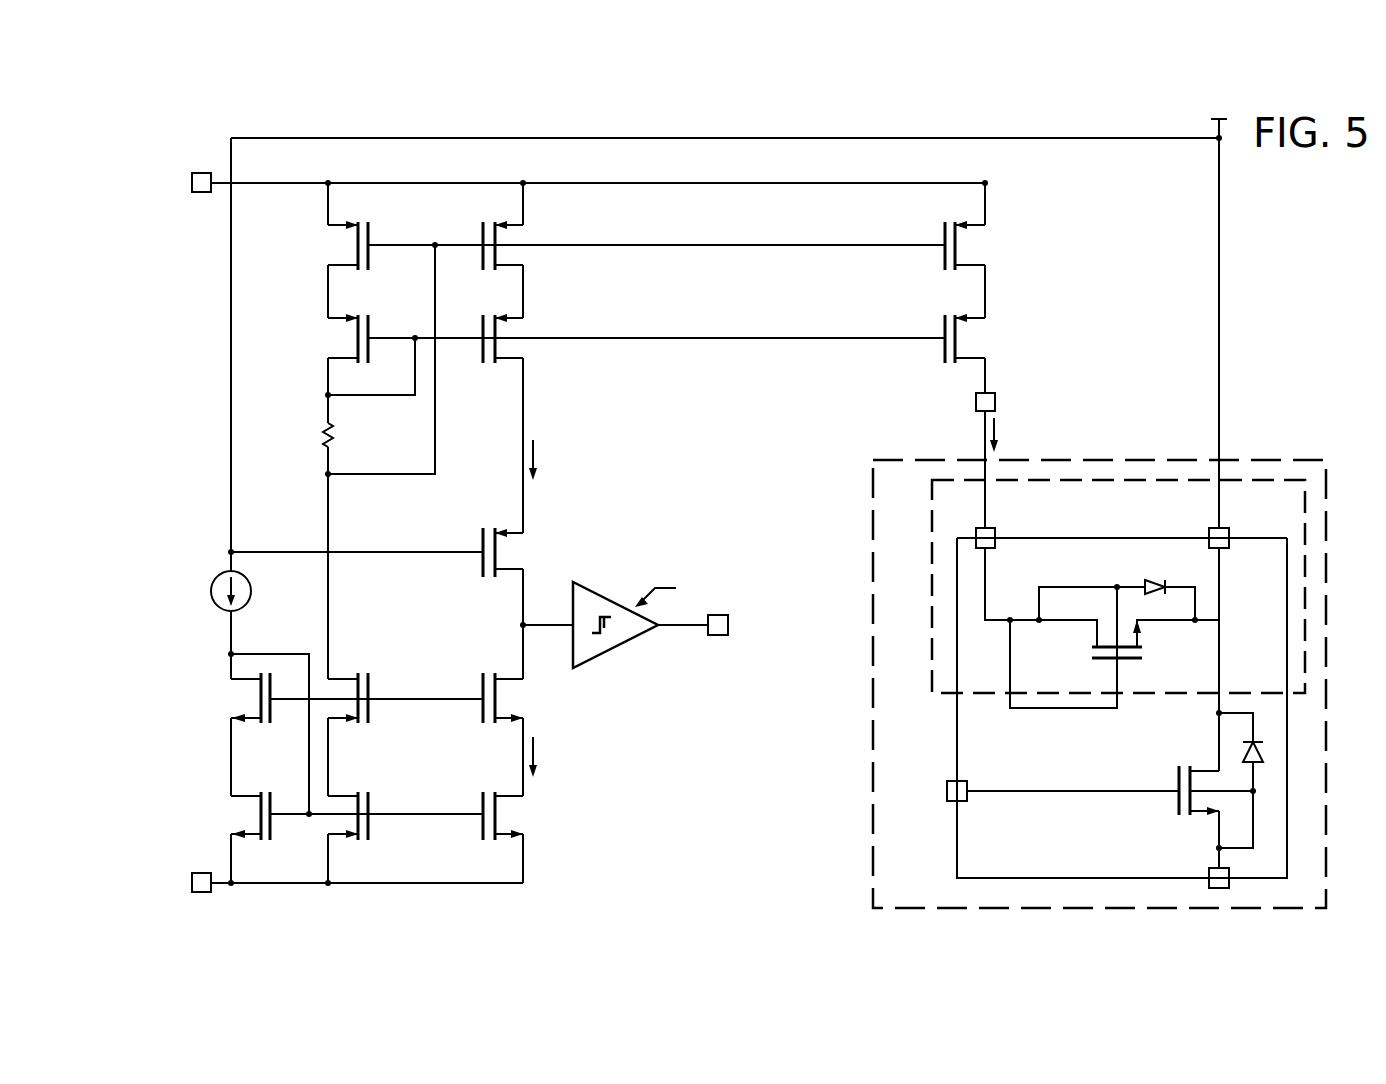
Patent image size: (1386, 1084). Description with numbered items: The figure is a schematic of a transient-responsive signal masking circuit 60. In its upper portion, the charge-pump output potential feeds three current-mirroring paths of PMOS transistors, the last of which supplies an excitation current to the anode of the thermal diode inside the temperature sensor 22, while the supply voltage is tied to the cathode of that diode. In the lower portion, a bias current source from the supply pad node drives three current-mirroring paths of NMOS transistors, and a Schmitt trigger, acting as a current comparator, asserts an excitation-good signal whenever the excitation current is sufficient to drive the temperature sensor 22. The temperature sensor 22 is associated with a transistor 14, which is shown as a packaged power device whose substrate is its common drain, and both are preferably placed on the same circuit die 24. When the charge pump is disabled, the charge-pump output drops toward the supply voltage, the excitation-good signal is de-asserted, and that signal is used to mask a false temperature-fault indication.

The transient-responsive signal masking circuit 60 is at (1272, 222).
The circuit die 24 is at (860, 760).
The temperature sensor 22 is at (1100, 525).
The transistor 14 is at (1164, 525).